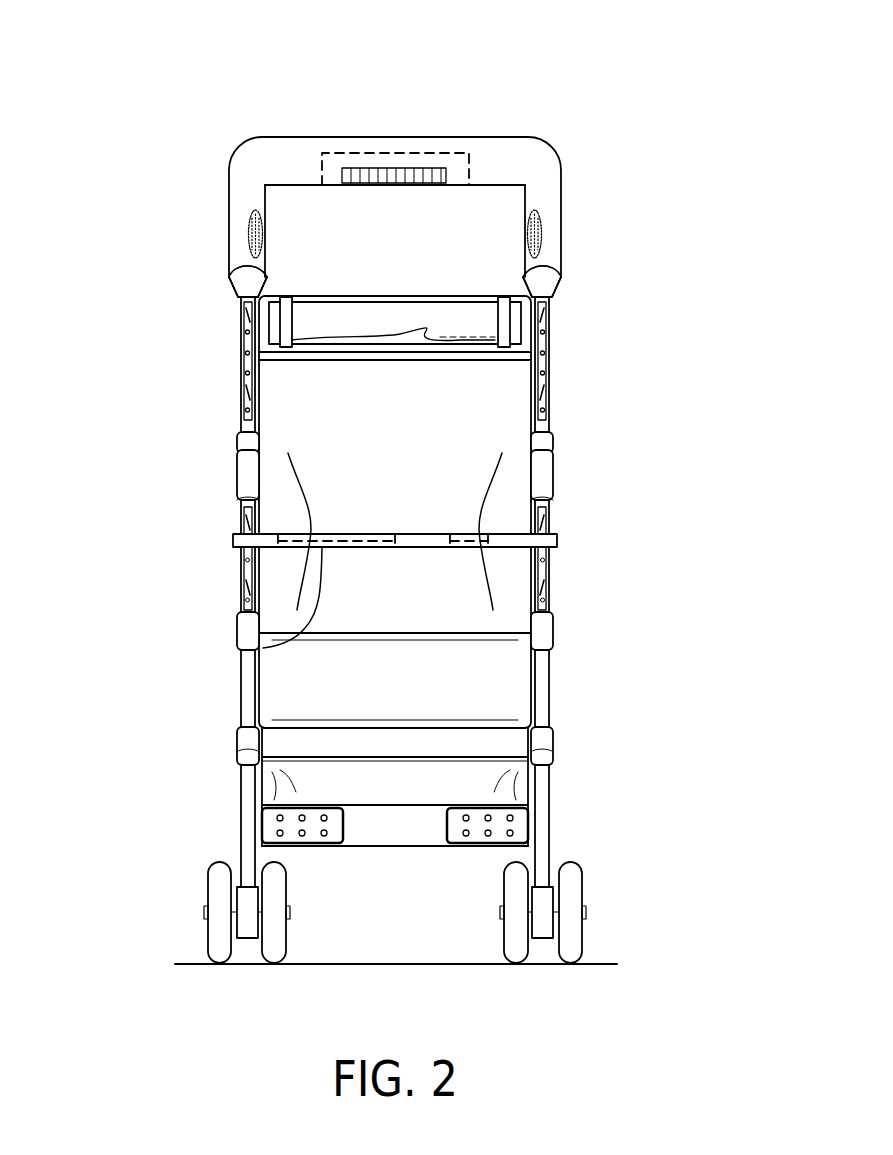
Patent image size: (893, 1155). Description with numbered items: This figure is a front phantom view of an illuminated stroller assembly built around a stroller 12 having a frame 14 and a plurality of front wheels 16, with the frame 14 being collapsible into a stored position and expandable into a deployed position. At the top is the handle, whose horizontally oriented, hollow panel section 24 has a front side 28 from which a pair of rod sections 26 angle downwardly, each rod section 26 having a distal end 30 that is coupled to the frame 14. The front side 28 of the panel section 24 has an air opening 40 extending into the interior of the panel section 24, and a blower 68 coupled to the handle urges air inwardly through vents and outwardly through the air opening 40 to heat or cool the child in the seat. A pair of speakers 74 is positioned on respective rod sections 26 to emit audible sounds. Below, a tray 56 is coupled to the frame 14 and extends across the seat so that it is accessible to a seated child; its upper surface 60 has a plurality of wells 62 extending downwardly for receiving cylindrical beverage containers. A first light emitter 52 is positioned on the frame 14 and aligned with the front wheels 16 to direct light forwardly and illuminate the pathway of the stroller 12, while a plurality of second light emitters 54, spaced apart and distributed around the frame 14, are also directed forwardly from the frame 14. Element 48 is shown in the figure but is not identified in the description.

The stroller 12 is at (188, 404).
The frame 14 is at (237, 628).
The front wheels 16 is at (213, 868).
The panel section 24 is at (467, 128).
The rod sections 26 is at (220, 220).
The front side 28 is at (300, 150).
The distal end 30 is at (240, 296).
The air opening 40 is at (393, 190).
The shoulder strap 48 is at (462, 335).
The first light emitter 52 is at (277, 821).
The second light emitters 54 is at (240, 413).
The tray 56 is at (263, 648).
The upper surface 60 is at (417, 533).
The wells 62 is at (335, 526).
The blower 68 is at (376, 153).
The speakers 74 is at (250, 225).